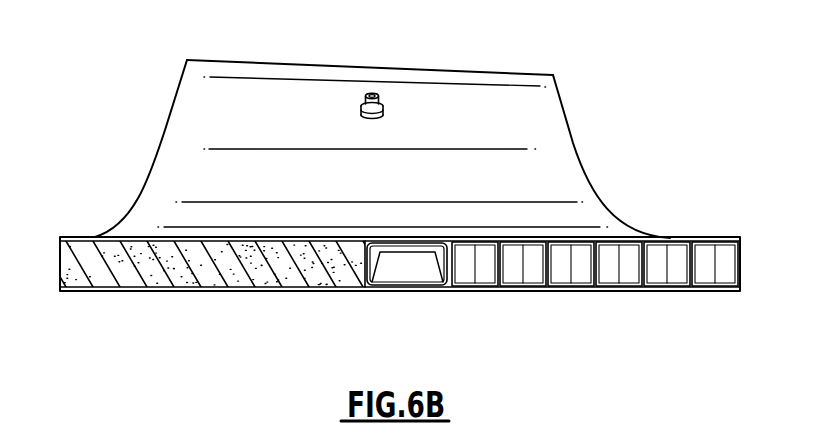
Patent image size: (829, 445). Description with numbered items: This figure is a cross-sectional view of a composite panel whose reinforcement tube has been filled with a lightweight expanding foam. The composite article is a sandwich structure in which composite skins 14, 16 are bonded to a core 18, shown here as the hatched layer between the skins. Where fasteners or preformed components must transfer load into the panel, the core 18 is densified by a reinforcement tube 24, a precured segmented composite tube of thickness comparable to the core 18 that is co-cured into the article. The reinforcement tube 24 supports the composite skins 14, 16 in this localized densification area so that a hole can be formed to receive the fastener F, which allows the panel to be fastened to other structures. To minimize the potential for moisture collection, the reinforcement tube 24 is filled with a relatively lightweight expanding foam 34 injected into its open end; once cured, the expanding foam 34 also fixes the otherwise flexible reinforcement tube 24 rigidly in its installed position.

The composite skin 14 is at (670, 237).
The composite skin 16 is at (700, 292).
The core 18 is at (138, 272).
The reinforcement tube 24 is at (430, 285).
The expanding foam 34 is at (412, 267).
The fastener F is at (383, 97).